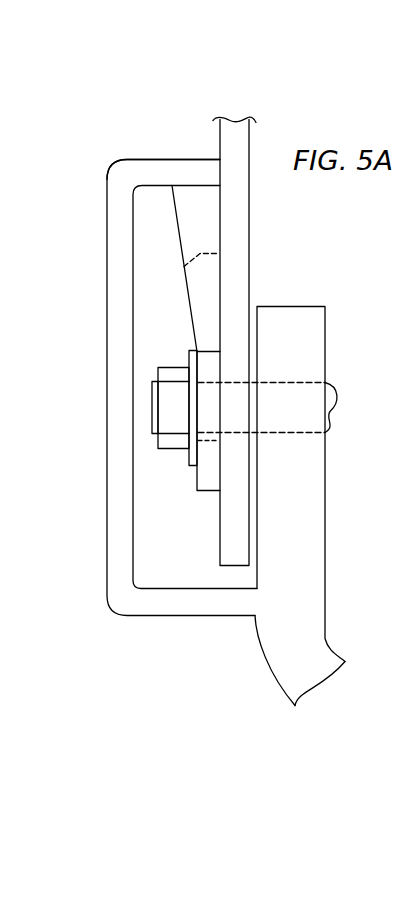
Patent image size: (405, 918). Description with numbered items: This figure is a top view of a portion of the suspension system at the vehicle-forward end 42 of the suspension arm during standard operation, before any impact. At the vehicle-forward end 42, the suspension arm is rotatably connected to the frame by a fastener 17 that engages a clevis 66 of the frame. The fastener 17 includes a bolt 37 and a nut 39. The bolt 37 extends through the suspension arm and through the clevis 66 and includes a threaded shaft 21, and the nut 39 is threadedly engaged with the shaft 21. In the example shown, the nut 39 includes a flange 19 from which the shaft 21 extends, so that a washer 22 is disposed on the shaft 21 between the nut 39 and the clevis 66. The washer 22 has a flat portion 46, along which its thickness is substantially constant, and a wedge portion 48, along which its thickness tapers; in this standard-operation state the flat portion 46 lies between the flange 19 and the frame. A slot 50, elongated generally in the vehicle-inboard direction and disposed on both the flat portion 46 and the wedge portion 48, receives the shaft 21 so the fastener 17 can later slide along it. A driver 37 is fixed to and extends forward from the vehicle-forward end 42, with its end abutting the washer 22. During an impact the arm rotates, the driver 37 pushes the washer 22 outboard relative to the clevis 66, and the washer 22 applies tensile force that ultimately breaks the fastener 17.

The fastener 17 is at (344, 392).
The flange 19 is at (188, 457).
The shaft 21 is at (330, 433).
The washer 22 is at (195, 200).
The bolt 37 is at (105, 563).
The nut 39 is at (175, 367).
The vehicle-forward end 42 is at (305, 308).
The flat portion 46 is at (210, 478).
The wedge portion 48 is at (188, 285).
The slot 50 is at (184, 268).
The clevis 66 is at (242, 248).